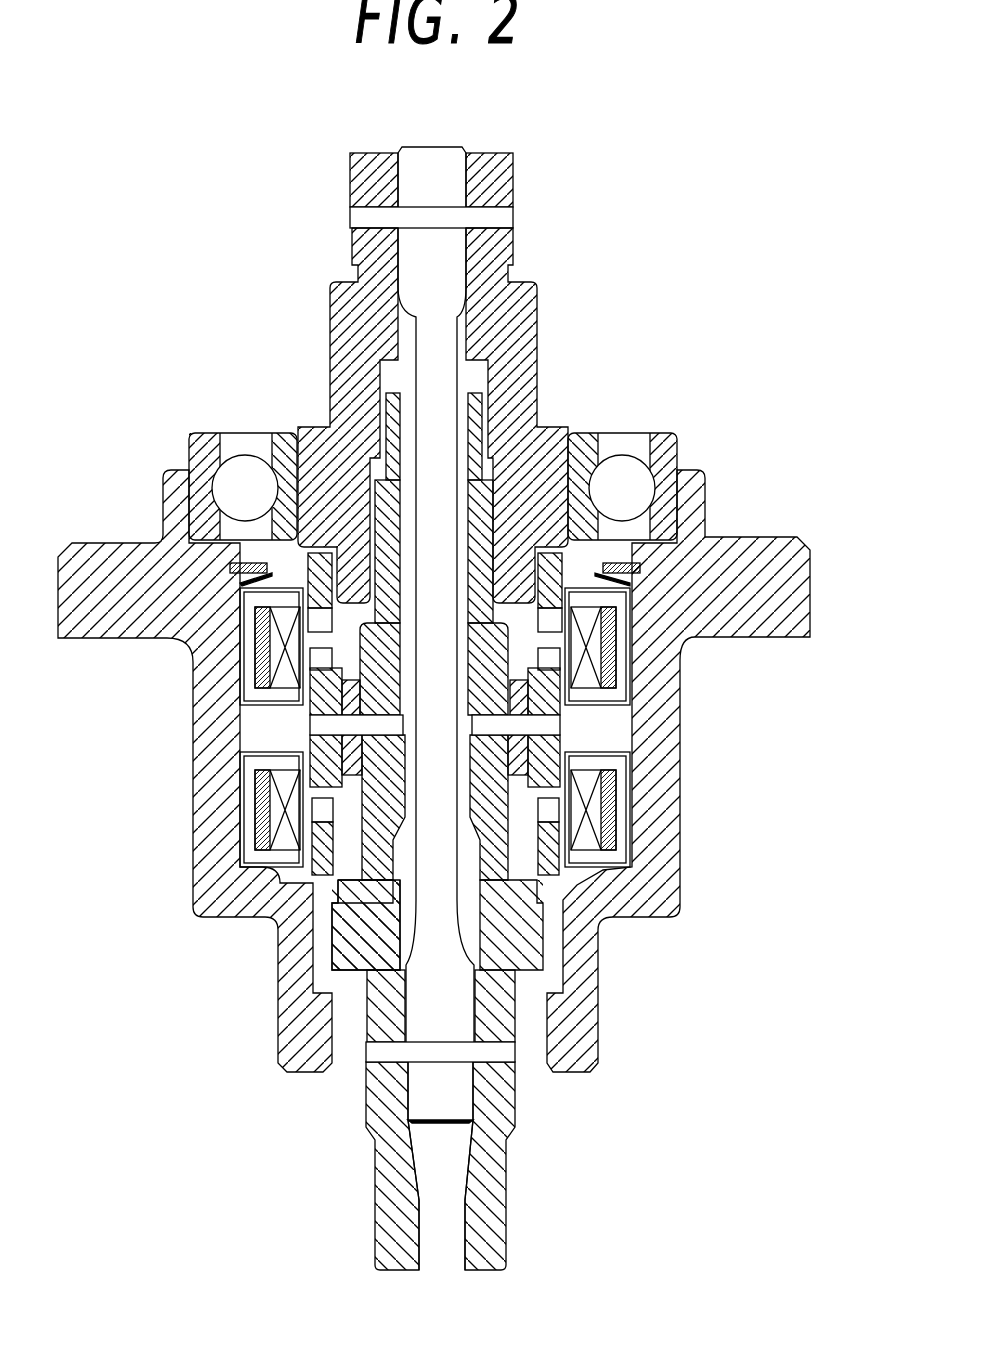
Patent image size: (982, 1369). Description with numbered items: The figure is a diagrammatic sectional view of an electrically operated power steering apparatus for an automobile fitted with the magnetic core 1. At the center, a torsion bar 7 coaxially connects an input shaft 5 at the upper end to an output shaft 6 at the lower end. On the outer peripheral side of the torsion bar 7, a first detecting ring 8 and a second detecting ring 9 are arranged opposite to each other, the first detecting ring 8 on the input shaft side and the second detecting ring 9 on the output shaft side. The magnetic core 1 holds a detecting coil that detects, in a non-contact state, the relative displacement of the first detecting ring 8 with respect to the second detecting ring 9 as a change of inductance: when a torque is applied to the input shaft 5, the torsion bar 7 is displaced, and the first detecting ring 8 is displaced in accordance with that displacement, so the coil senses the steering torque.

The magnetic core 1 is at (636, 661).
The input shaft 5 is at (538, 300).
The output shaft 6 is at (503, 1110).
The torsion bar 7 is at (440, 390).
The first detecting ring 8 is at (637, 553).
The second detecting ring 9 is at (562, 703).